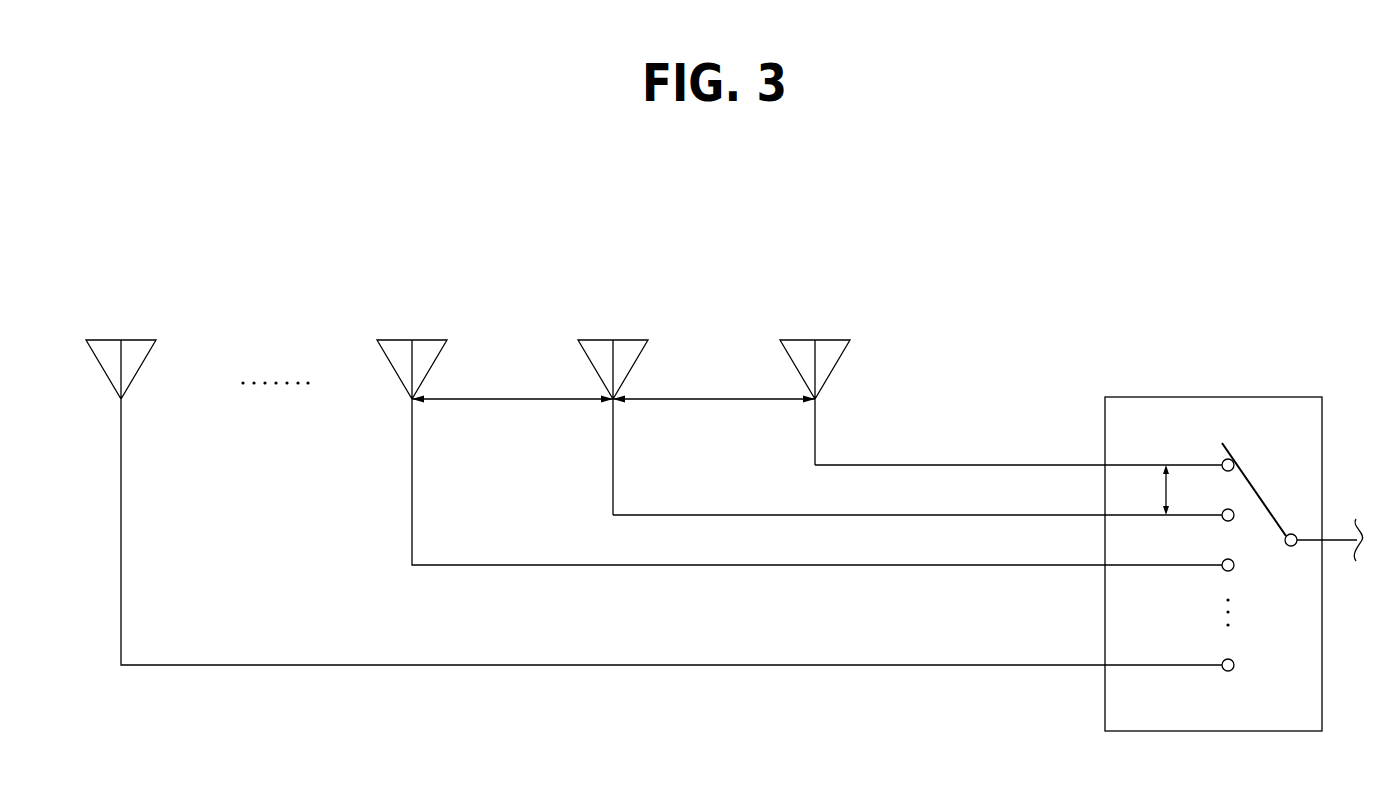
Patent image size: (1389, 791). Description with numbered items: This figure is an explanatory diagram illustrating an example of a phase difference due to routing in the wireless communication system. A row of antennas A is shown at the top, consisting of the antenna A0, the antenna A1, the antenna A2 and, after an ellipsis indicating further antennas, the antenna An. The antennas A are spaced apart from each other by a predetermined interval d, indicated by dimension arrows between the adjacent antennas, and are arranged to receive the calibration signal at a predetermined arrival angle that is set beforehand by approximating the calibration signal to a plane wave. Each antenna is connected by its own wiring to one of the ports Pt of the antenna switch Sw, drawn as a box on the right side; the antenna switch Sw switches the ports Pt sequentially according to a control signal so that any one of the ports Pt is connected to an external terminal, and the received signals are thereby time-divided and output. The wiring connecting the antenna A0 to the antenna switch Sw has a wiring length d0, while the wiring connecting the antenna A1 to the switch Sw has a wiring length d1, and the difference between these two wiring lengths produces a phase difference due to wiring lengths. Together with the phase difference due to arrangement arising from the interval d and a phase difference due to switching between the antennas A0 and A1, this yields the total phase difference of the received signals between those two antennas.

The antennas A is at (790, 272).
The antenna An is at (105, 340).
The antenna A2 is at (398, 340).
The antenna A1 is at (598, 340).
The antenna A0 is at (800, 340).
The predetermined interval d is at (613, 389).
The wiring length d0 is at (1018, 452).
The wiring length d1 is at (917, 502).
The antenna switch Sw is at (1273, 397).
The ports Pt is at (1234, 468).